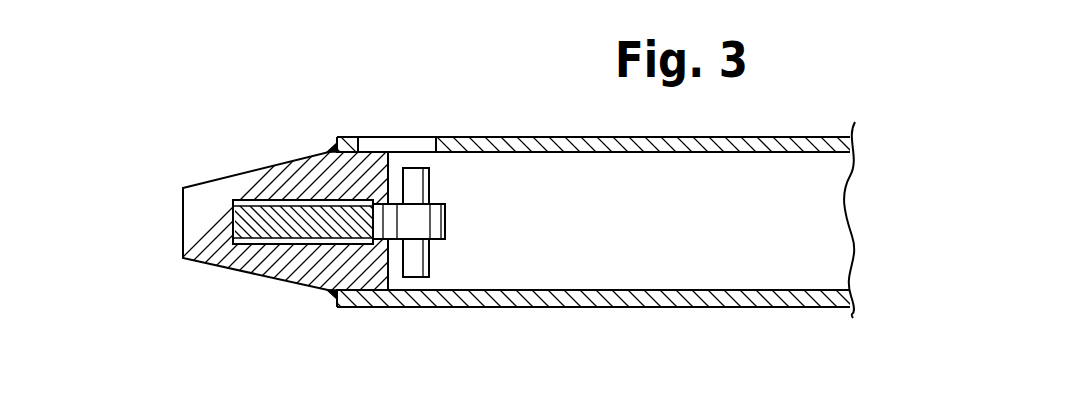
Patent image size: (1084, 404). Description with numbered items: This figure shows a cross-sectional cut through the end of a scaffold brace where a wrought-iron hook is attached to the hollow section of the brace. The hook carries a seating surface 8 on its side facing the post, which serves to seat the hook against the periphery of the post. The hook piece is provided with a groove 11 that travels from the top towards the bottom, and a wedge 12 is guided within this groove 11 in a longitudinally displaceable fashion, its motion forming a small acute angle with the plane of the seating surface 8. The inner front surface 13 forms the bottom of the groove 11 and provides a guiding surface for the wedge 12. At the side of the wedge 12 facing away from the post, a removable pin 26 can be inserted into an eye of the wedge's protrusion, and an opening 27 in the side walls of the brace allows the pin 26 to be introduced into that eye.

The seating surface 8 is at (172, 218).
The groove 11 is at (288, 197).
The wedge 12 is at (258, 223).
The inner front surface 13 is at (233, 225).
The pin 26 is at (424, 188).
The opening 27 is at (398, 139).